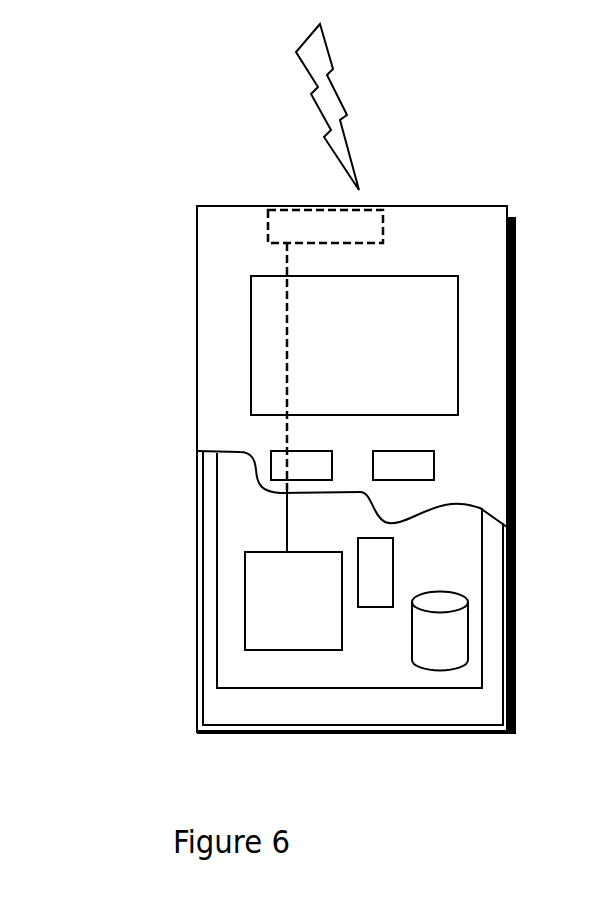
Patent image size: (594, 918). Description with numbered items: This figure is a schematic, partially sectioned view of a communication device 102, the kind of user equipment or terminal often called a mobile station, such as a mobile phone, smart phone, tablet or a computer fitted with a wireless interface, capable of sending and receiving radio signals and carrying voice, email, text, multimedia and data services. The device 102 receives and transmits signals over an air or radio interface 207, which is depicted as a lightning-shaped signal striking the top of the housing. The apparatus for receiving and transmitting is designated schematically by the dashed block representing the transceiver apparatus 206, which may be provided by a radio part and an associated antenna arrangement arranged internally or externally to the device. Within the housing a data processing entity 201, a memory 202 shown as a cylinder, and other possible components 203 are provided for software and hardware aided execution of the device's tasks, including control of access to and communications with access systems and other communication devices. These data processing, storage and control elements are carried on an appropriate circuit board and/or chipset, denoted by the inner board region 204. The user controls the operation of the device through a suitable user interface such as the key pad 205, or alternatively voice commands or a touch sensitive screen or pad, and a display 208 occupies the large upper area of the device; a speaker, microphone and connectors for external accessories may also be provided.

The communication device 102 is at (198, 249).
The data processing entity 201 is at (250, 583).
The memory 202 is at (433, 641).
The other possible components 203 is at (377, 556).
The circuit board 204 is at (243, 670).
The key pad 205 is at (277, 465).
The transceiver apparatus 206 is at (373, 220).
The air or radio interface 207 is at (358, 137).
The display 208 is at (268, 332).